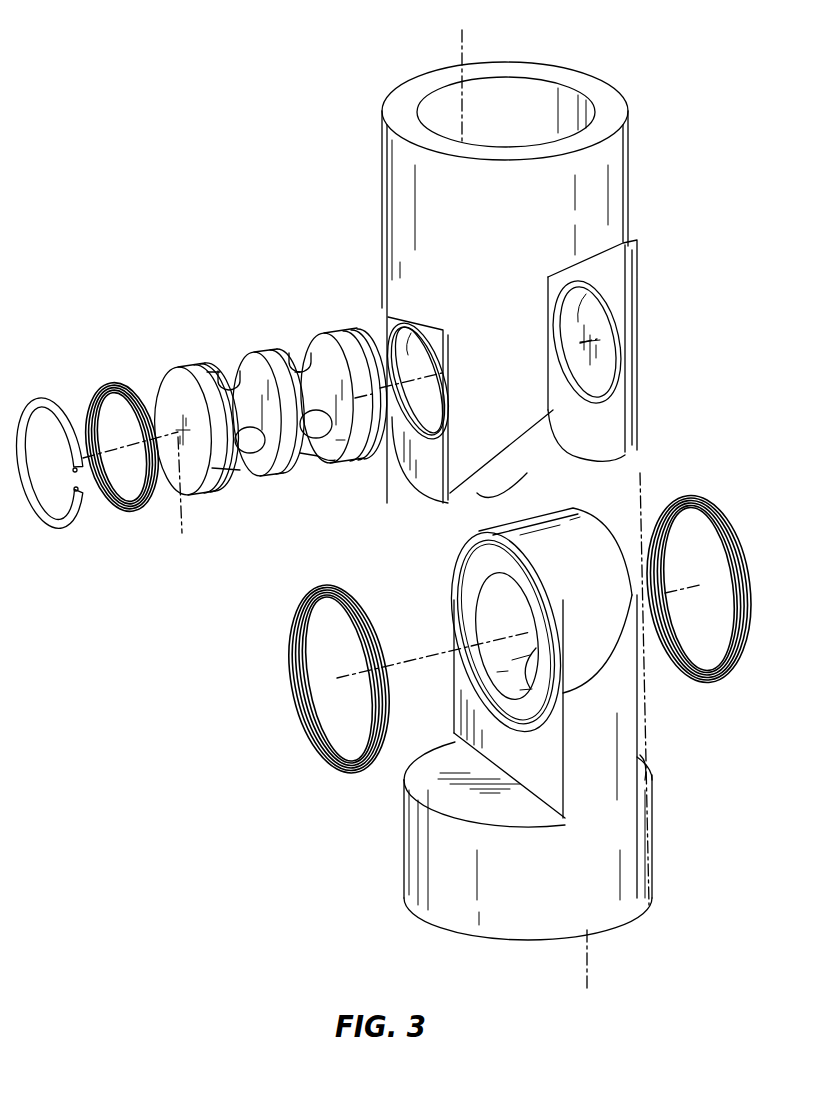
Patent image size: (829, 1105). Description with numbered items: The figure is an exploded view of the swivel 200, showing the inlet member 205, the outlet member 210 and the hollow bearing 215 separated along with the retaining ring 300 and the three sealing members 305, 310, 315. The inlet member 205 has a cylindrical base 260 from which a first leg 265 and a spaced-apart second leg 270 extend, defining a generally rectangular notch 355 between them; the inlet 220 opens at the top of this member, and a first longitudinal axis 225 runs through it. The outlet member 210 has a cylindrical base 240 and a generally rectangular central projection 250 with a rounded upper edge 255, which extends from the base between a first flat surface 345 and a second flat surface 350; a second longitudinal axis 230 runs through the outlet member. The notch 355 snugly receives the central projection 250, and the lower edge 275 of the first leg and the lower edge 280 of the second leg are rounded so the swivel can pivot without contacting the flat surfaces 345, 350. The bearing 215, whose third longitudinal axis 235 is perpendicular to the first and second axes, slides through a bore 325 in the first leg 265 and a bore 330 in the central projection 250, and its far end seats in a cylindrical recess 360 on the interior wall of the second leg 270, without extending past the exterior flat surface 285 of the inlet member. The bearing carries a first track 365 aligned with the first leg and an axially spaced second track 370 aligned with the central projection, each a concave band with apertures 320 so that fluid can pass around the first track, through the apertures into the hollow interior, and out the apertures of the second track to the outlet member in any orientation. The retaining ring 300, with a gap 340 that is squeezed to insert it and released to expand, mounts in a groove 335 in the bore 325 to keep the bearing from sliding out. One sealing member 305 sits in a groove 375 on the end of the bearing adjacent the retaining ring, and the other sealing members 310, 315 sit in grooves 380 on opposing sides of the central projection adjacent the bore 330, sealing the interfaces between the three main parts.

The swivel 200 is at (232, 80).
The inlet member 205 is at (348, 208).
The outlet member 210 is at (368, 918).
The hollow bearing 215 is at (288, 462).
The inlet 220 is at (498, 103).
The first longitudinal axis 225 is at (460, 103).
The second longitudinal axis 230 is at (590, 958).
The third longitudinal axis 235 is at (180, 501).
The cylindrical base 240 is at (642, 830).
The central projection 250 is at (620, 688).
The upper edge 255 is at (607, 550).
The cylindrical base 260 is at (620, 198).
The first leg 265 is at (390, 317).
The second leg 270 is at (637, 360).
The lower edge 275 is at (503, 490).
The lower edge 280 is at (640, 440).
The exterior flat surface 285 is at (437, 475).
The retaining ring 300 is at (52, 518).
The sealing member 305 is at (112, 388).
The sealing member 310 is at (292, 655).
The sealing member 315 is at (748, 535).
The apertures 320 is at (290, 358).
The bore 325 is at (410, 345).
The bore 330 is at (482, 610).
The groove 335 is at (390, 455).
The gap 340 is at (90, 505).
The first flat surface 345 is at (420, 790).
The second flat surface 350 is at (653, 778).
The notch 355 is at (566, 460).
The cylindrical recess 360 is at (583, 302).
The first track 365 is at (218, 373).
The second track 370 is at (309, 465).
The groove 375 is at (178, 372).
The grooves 380 is at (463, 638).